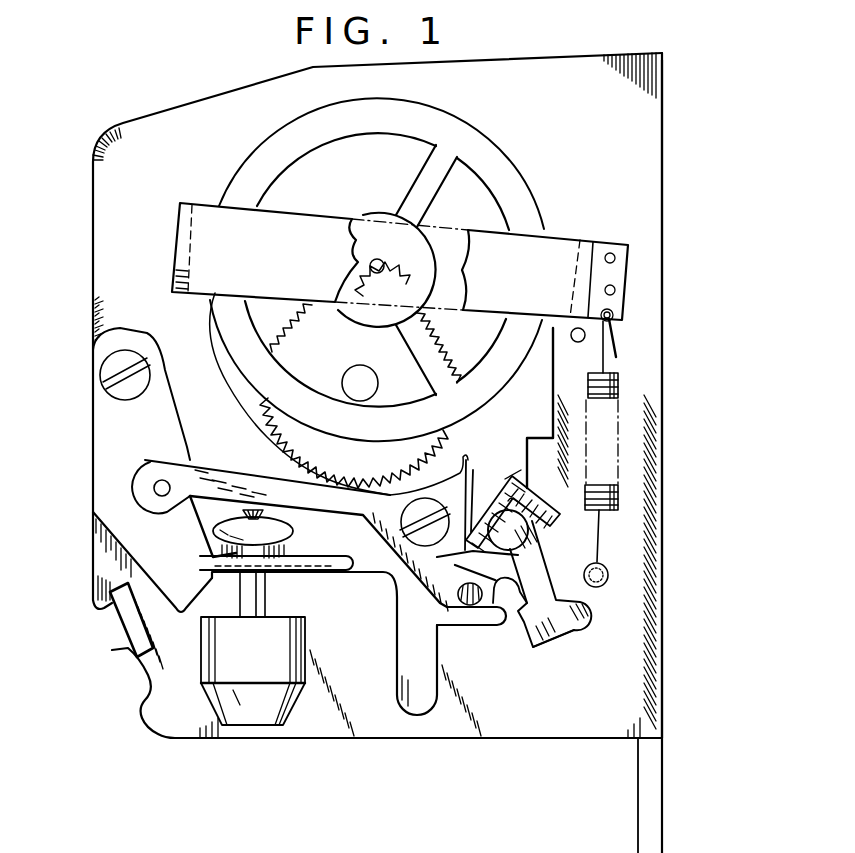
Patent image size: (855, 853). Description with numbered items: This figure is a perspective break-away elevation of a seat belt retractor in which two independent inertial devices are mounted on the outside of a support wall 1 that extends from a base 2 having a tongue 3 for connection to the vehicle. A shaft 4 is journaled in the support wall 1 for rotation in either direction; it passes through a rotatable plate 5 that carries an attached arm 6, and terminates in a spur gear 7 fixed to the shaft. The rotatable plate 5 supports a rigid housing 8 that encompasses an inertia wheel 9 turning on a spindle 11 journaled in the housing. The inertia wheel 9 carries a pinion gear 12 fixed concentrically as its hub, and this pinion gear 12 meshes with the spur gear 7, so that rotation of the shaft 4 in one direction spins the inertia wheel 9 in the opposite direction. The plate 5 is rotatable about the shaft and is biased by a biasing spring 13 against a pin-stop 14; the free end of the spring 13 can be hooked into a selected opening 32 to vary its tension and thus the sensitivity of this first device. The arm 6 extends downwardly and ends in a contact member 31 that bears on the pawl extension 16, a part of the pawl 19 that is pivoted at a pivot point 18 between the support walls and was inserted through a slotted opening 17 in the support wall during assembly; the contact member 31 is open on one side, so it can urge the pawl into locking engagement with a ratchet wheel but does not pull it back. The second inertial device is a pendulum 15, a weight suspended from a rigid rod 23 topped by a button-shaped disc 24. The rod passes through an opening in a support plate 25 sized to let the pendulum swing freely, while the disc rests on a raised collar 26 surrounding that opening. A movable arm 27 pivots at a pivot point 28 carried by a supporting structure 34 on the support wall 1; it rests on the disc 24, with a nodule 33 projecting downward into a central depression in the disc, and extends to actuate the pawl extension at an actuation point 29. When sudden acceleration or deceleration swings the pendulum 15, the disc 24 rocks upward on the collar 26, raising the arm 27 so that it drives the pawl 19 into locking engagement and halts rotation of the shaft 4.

The support wall 1 is at (655, 147).
The base 2 is at (664, 181).
The tongue 3 is at (655, 786).
The shaft 4 is at (366, 378).
The rotatable plate 5 is at (510, 434).
The arm 6 is at (519, 472).
The spur gear 7 is at (330, 354).
The rigid housing 8 is at (548, 246).
The inertia wheel 9 is at (465, 134).
The spindle 11 is at (369, 267).
The pinion gear 12 is at (400, 288).
The biasing spring 13 is at (620, 498).
The pin-stop 14 is at (571, 327).
The pendulum 15 is at (270, 697).
The pawl extension 16 is at (519, 521).
The slotted opening 17 is at (511, 590).
The pivot point 18 is at (590, 614).
The pawl 19 is at (576, 627).
The rigid rod 23 is at (252, 595).
The button-shaped disc 24 is at (295, 537).
The support plate 25 is at (334, 565).
The raised collar 26 is at (240, 550).
The movable arm 27 is at (206, 486).
The pivot point 28 is at (153, 488).
The actuation point 29 is at (468, 606).
The contact member 31 is at (477, 522).
The opening 32 is at (668, 266).
The nodule 33 is at (252, 508).
The supporting structure 34 is at (100, 419).